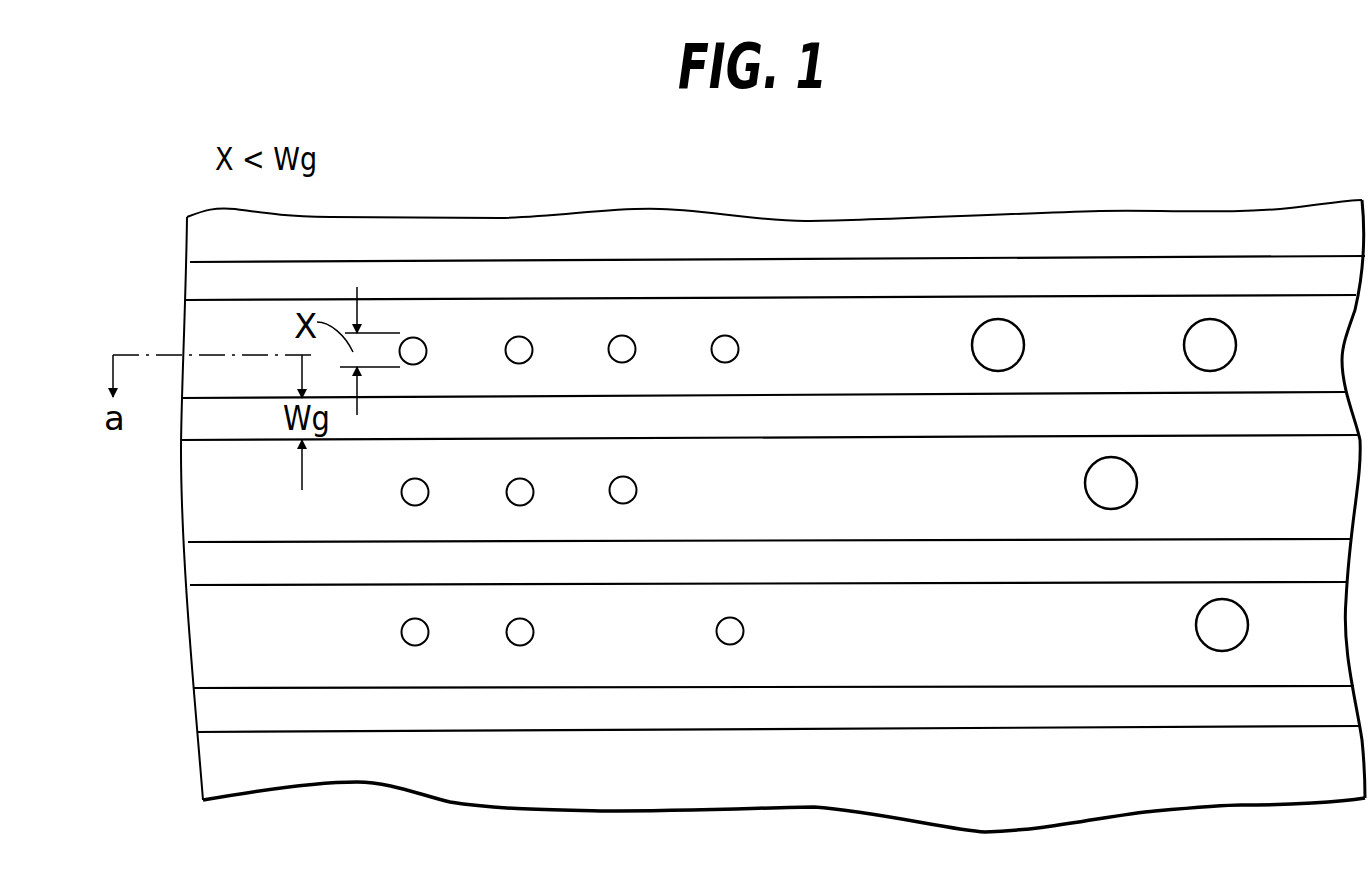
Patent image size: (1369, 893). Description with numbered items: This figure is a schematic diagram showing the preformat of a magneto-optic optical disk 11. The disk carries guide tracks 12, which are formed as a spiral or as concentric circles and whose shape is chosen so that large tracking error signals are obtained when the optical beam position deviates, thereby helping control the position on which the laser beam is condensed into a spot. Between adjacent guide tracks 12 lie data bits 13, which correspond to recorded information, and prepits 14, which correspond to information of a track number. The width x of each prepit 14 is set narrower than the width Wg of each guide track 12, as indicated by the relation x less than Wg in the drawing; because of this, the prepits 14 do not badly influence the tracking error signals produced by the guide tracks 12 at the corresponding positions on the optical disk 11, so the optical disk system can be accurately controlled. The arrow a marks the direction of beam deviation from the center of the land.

The optical disk 11 is at (367, 243).
The guide tracks 12 is at (863, 415).
The data bits 13 is at (1203, 340).
The prepits 14 is at (725, 336).